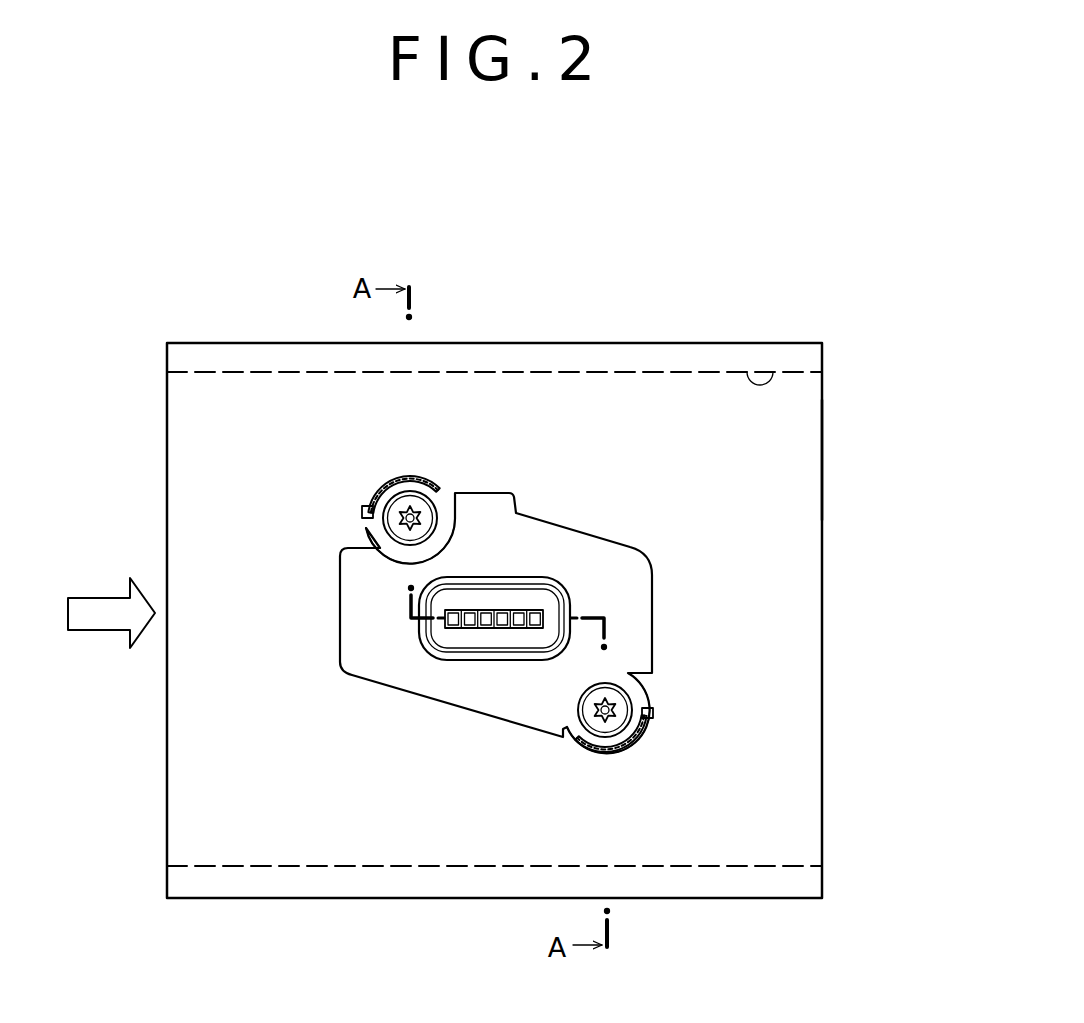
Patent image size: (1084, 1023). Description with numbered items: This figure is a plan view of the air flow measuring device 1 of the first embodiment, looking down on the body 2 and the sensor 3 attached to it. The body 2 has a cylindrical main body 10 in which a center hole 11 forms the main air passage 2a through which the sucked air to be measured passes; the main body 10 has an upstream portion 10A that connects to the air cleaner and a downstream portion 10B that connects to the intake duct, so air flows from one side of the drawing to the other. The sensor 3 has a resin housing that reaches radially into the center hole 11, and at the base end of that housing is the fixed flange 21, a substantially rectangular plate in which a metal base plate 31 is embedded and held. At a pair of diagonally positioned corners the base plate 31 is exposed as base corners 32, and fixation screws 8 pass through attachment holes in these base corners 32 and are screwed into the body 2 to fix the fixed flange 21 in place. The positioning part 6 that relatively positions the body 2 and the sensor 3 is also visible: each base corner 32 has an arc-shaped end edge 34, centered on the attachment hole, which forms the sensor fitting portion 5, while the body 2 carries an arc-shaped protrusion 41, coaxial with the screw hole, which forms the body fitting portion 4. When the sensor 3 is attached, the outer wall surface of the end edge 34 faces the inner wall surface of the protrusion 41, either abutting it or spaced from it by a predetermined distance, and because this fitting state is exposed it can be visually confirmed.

The air flow measuring device 1 is at (617, 254).
The body 2 is at (451, 504).
The main air passage 2a is at (748, 383).
The sensor 3 is at (504, 575).
The body fitting portion 4 is at (392, 480).
The sensor fitting portion 5 is at (378, 517).
The positioning part 6 is at (506, 606).
The fixation screw 8 is at (426, 515).
The main body 10 is at (673, 390).
The upstream portion 10A is at (167, 456).
The downstream portion 10B is at (822, 460).
The center hole 11 is at (769, 320).
The fixed flange 21 is at (368, 653).
The base plate 31 is at (393, 553).
The base corner 32 is at (368, 531).
The end edge 34 is at (510, 603).
The protrusion 41 is at (509, 607).